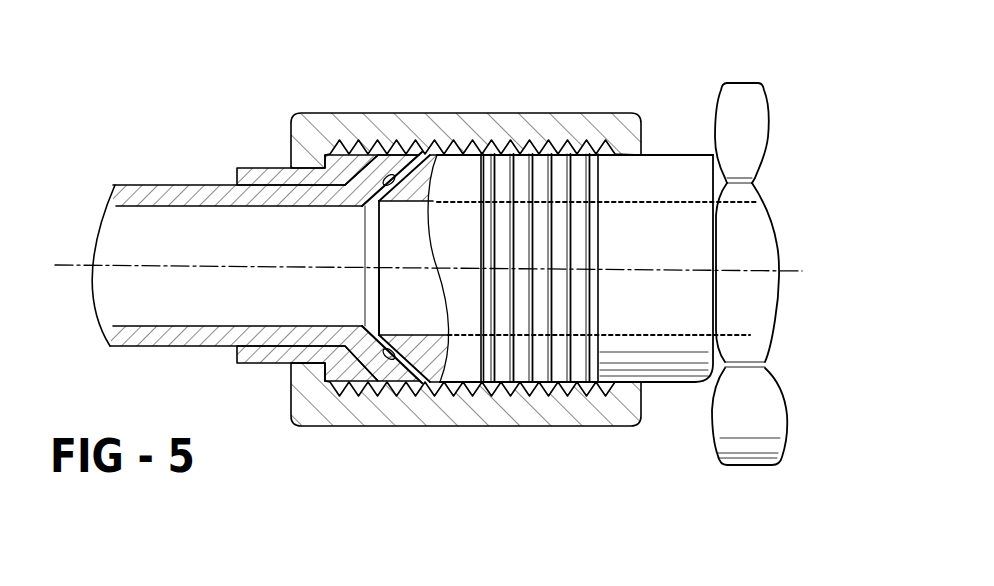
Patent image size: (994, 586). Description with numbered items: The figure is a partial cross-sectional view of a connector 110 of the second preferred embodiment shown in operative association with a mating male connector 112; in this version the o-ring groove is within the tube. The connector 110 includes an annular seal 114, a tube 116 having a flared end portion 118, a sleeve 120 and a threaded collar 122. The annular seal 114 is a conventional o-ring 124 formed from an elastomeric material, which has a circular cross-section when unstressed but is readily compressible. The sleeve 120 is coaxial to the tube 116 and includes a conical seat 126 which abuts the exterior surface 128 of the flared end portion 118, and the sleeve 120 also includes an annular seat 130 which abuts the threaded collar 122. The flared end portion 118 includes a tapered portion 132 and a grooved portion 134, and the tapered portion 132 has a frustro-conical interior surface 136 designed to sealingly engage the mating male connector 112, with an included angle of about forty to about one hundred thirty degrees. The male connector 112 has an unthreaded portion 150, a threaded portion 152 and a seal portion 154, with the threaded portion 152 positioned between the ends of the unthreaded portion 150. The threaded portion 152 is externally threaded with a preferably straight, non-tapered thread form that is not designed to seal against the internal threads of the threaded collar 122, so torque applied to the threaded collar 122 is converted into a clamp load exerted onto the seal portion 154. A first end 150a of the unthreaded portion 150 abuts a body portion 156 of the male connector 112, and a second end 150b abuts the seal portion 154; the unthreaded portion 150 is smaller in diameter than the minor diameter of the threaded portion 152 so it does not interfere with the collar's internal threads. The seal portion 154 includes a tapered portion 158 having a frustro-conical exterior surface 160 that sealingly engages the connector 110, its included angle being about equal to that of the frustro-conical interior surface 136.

The connector 110 is at (230, 115).
The mating male connector 112 is at (796, 92).
The annular seal 114 is at (392, 152).
The tube 116 is at (163, 207).
The flared end portion 118 is at (358, 209).
The sleeve 120 is at (237, 168).
The threaded collar 122 is at (352, 122).
The o-ring 124 is at (388, 343).
The conical seat 126 is at (392, 163).
The exterior surface 128 is at (343, 345).
The annular seat 130 is at (327, 380).
The tapered portion 132 is at (369, 245).
The grooved portion 134 is at (404, 358).
The frustro-conical interior surface 136 is at (369, 290).
The unthreaded portion 150 is at (679, 189).
The first end 150a is at (645, 172).
The second end 150b is at (467, 357).
The threaded portion 152 is at (553, 243).
The seal portion 154 is at (407, 191).
The body portion 156 is at (748, 287).
The tapered portion 158 is at (440, 390).
The frustro-conical exterior surface 160 is at (410, 160).